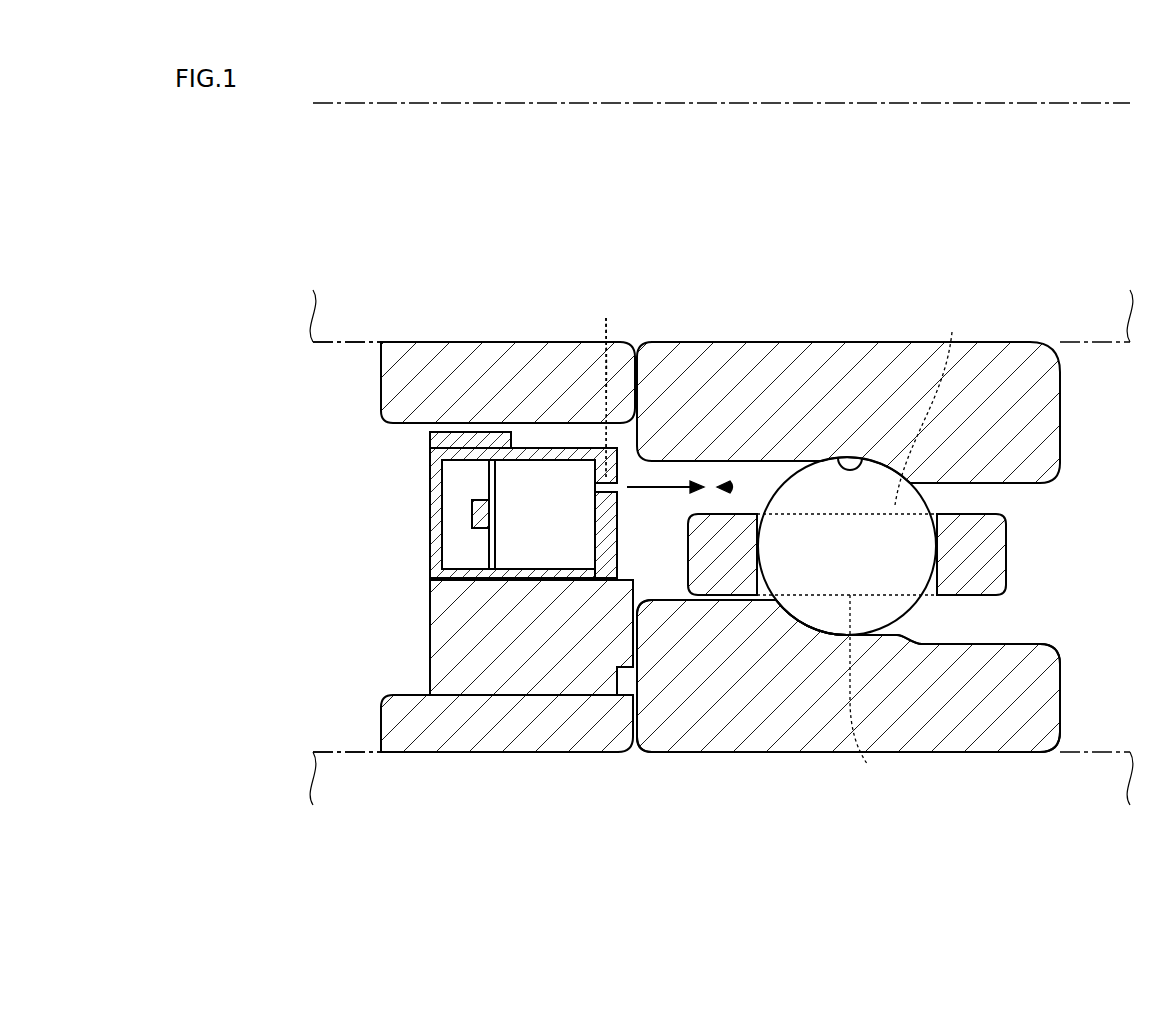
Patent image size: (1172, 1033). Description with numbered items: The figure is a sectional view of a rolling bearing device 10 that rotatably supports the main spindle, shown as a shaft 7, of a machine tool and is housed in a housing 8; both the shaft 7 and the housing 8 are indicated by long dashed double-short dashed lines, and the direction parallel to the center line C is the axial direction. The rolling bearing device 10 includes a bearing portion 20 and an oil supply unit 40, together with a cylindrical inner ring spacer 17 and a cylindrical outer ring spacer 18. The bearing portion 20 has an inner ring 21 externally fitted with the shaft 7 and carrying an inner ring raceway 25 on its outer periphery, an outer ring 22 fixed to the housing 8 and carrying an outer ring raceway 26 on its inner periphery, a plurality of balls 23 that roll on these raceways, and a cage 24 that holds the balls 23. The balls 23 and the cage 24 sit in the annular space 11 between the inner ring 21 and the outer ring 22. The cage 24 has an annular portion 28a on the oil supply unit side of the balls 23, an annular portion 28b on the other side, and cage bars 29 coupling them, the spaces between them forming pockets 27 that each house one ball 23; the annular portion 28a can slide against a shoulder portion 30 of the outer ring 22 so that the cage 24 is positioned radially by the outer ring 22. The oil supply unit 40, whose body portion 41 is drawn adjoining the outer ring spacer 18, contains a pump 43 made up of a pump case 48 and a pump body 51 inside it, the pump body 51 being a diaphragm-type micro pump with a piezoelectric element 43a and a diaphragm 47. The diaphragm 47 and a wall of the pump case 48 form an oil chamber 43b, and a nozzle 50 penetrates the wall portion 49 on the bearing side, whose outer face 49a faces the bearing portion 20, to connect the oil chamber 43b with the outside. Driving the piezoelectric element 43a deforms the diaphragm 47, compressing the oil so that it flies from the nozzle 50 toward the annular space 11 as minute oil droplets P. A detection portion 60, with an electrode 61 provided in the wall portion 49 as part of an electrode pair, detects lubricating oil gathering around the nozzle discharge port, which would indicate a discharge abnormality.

The center line C is at (402, 106).
The shaft 7 is at (336, 348).
The housing 8 is at (341, 748).
The rolling bearing device 10 is at (1088, 686).
The annular space 11 is at (676, 597).
The inner ring spacer 17 is at (426, 362).
The outer ring spacer 18 is at (428, 730).
The bearing portion 20 is at (995, 768).
The inner ring 21 is at (1043, 417).
The outer ring 22 is at (1045, 712).
The balls 23 is at (828, 613).
The cage 24 is at (1023, 544).
The inner ring raceway 25 is at (848, 457).
The outer ring raceway 26 is at (820, 634).
The pockets 27 is at (895, 510).
The annular portion 28a is at (730, 578).
The annular portion 28b is at (995, 568).
The cage bars 29 is at (867, 693).
The shoulder portion 30 is at (713, 610).
The oil supply unit 40 is at (532, 712).
The housing body 41 is at (445, 641).
The pump 43 is at (415, 518).
The piezoelectric element 43a is at (475, 516).
The oil chamber 43b is at (561, 524).
The diaphragm 47 is at (480, 476).
The pump case 48 is at (430, 491).
The wall portion 49 is at (596, 517).
The outer face 49a is at (620, 510).
The nozzle 50 is at (600, 473).
The pump body 51 is at (484, 458).
The detection portion 60 is at (604, 332).
The electrode 61 is at (605, 384).
The oil droplets P is at (732, 484).